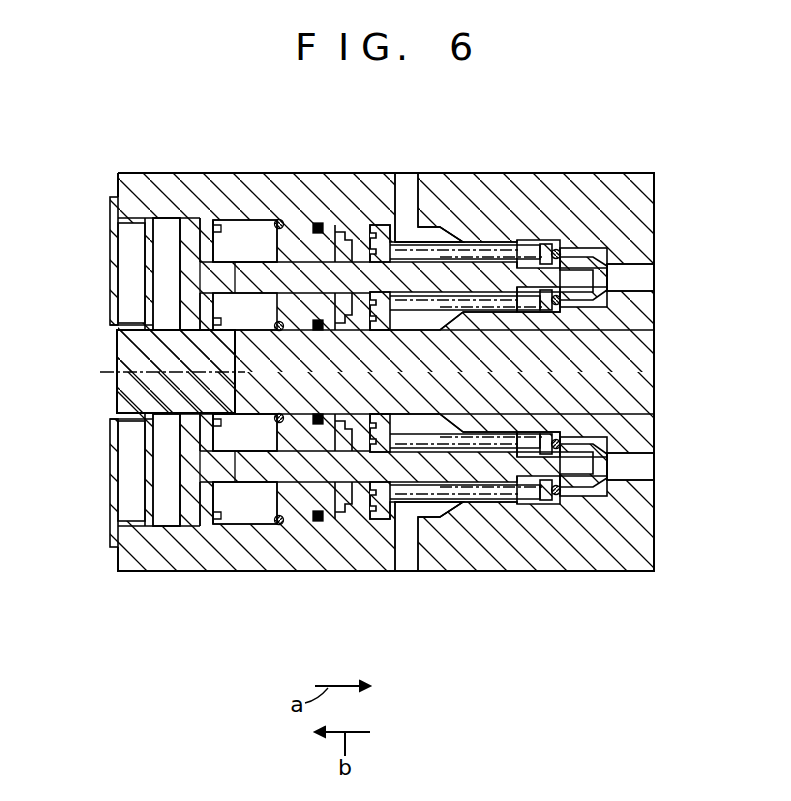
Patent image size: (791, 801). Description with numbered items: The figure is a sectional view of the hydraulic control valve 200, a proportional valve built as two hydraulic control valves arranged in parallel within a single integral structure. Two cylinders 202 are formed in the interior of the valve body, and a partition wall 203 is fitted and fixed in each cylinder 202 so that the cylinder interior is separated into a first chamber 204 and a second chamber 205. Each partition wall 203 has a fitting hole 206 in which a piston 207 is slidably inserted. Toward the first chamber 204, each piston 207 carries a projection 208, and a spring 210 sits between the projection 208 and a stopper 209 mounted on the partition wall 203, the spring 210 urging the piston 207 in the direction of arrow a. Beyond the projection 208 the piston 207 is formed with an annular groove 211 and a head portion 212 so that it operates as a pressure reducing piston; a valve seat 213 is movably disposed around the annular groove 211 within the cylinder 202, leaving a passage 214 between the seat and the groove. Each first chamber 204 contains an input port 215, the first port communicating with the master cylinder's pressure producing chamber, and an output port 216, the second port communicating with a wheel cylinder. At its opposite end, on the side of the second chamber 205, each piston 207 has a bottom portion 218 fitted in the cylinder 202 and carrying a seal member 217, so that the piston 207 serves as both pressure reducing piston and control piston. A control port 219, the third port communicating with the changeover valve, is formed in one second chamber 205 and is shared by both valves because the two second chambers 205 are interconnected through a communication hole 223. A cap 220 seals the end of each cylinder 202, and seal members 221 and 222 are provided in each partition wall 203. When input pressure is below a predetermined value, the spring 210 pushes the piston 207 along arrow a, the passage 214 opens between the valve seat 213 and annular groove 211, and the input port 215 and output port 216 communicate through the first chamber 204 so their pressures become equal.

The hydraulic control valve 200 is at (598, 190).
The cylinder 202 is at (257, 235).
The partition wall 203 is at (366, 240).
The first chamber 204 is at (466, 248).
The second chamber 205 is at (230, 235).
The fitting hole 206 is at (292, 224).
The piston 207 is at (340, 232).
The projection 208 is at (512, 248).
The stopper 209 is at (406, 215).
The spring 210 is at (480, 240).
The annular groove 211 is at (572, 250).
The head portion 212 is at (602, 262).
The valve seat 213 is at (554, 250).
The passage 214 is at (545, 248).
The input port 215 is at (430, 240).
The output port 216 is at (647, 277).
The seal member 217 is at (192, 232).
The bottom portion 218 is at (170, 222).
The control port 219 is at (245, 540).
The cap 220 is at (120, 192).
The seal member 221 is at (316, 222).
The seal member 222 is at (356, 245).
The communication hole 223 is at (200, 375).